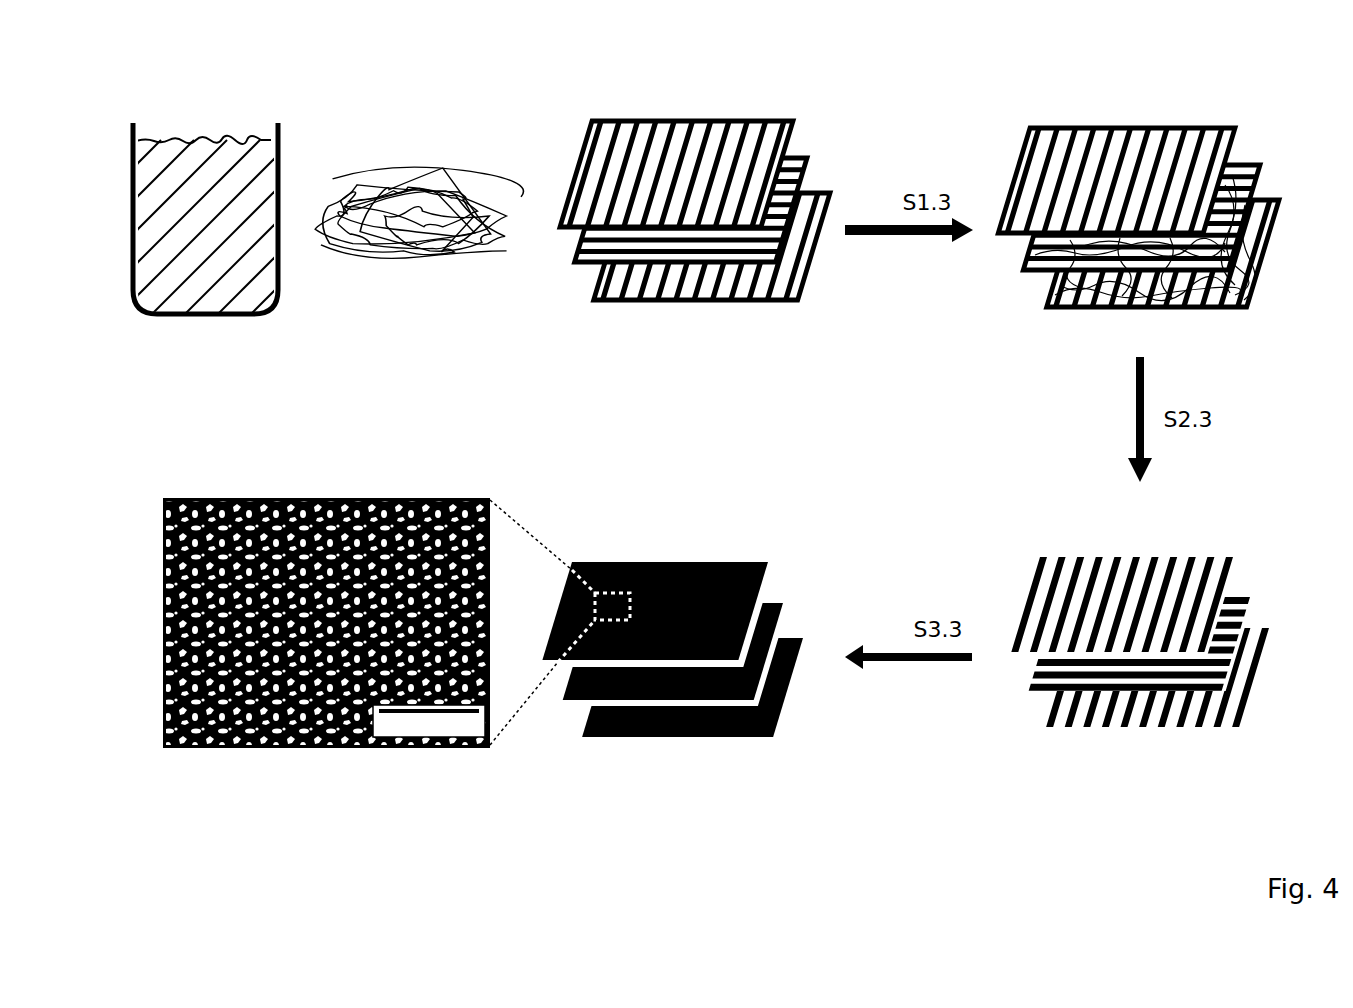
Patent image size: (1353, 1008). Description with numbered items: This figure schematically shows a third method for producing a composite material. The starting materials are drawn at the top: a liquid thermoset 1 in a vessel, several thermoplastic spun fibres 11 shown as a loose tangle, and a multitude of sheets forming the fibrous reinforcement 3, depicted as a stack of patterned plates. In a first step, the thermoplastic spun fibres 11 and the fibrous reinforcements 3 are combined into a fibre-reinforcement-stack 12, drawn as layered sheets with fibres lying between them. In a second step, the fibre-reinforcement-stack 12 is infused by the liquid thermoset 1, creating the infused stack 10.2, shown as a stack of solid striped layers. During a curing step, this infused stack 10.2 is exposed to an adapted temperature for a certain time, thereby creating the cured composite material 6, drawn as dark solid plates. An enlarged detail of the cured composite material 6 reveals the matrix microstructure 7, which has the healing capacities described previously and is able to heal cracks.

The liquid thermoset 1 is at (200, 180).
The thermoplastic spun fibres 11 is at (430, 197).
The fibrous reinforcement 3 is at (822, 198).
The fibre-reinforcement-stack 12 is at (1224, 103).
The infused stack 10.2 is at (1245, 563).
The cured composite material 6 is at (789, 563).
The matrix microstructure 7 is at (228, 725).